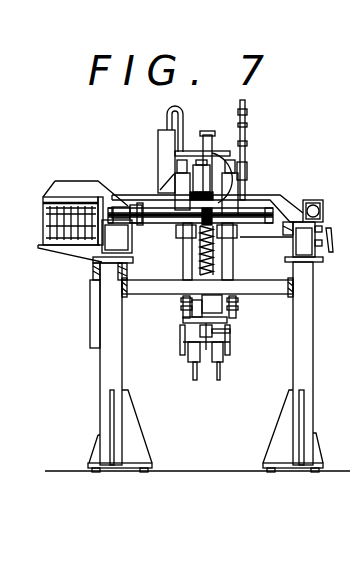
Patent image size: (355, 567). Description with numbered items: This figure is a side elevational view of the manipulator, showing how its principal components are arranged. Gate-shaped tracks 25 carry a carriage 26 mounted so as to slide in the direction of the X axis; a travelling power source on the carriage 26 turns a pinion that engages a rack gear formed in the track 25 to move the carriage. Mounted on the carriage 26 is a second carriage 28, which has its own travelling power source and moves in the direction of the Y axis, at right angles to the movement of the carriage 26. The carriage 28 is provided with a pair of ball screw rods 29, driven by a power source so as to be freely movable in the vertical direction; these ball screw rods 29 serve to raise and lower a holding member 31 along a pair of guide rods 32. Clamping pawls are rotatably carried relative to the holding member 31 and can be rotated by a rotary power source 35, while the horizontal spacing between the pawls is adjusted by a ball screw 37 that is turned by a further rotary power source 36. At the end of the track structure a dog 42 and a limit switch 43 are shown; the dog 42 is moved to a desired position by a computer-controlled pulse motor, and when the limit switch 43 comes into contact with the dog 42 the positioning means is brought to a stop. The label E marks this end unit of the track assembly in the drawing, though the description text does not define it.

The gate-shaped tracks 25 is at (306, 252).
The carriage 26 is at (289, 205).
The carriage 28 is at (170, 198).
The ball screw rods 29 is at (213, 256).
The holding member 31 is at (230, 306).
The guide rods 32 is at (183, 268).
The rotary power source 35 is at (182, 304).
The rotary power source 36 is at (231, 330).
The ball screw 37 is at (220, 366).
The dog 42 is at (328, 213).
The limit switch 43 is at (328, 246).
The end unit E is at (322, 200).